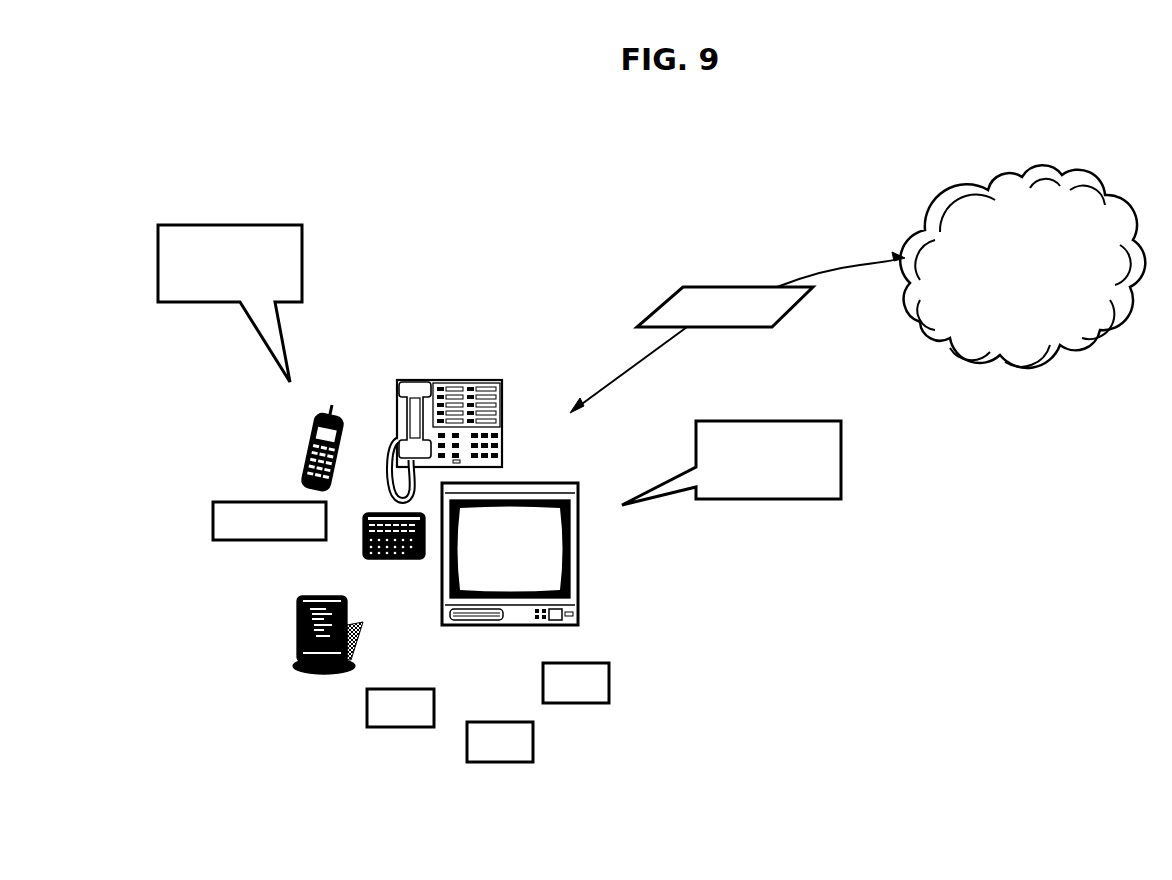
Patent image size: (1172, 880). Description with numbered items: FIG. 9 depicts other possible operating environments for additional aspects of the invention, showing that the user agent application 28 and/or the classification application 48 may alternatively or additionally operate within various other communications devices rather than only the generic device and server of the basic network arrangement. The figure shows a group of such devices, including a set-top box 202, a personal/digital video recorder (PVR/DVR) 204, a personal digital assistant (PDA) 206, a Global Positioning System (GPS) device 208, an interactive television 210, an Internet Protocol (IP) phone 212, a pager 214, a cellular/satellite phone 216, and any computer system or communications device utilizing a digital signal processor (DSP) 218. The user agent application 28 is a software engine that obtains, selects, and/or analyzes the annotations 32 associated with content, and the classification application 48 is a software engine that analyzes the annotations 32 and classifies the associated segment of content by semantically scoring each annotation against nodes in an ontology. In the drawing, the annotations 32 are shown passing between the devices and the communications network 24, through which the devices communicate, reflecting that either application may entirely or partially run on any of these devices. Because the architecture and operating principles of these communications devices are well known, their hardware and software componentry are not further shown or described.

The communications network 24 is at (945, 190).
The user agent application 28 is at (197, 224).
The annotations 32 is at (707, 285).
The classification application 48 is at (800, 500).
The set-top box 202 is at (491, 721).
The personal/digital video recorder (PVR/DVR) 204 is at (248, 542).
The personal digital assistant (PDA) 206 is at (297, 620).
The Global Positioning System (GPS) device 208 is at (384, 688).
The interactive television 210 is at (488, 625).
The Internet Protocol (IP) phone 212 is at (397, 389).
The pager 214 is at (397, 560).
The cellular/satellite phone 216 is at (308, 447).
The digital signal processor (DSP) 218 is at (611, 682).